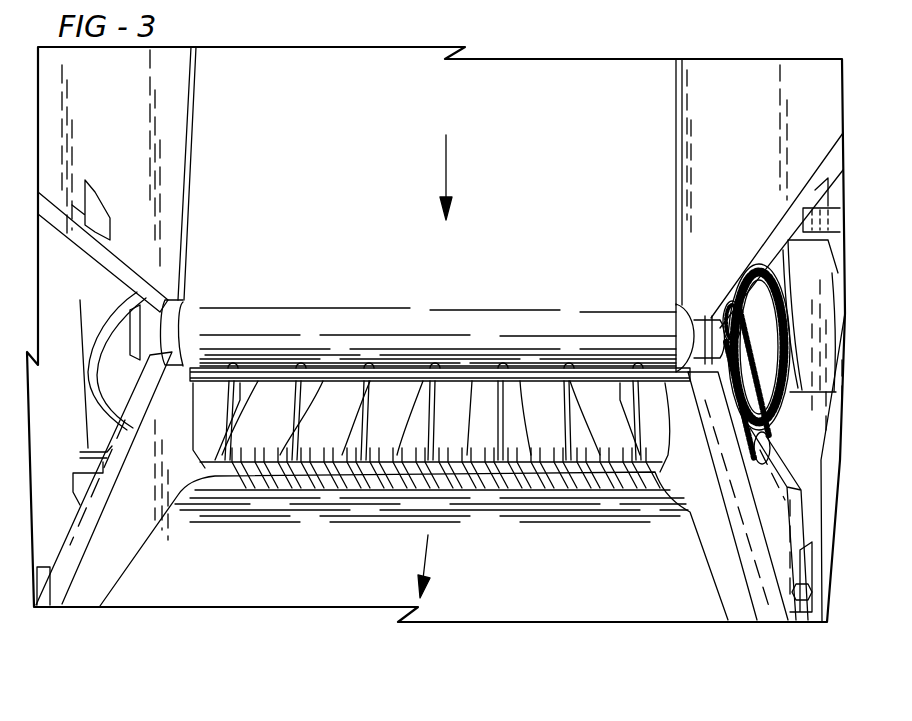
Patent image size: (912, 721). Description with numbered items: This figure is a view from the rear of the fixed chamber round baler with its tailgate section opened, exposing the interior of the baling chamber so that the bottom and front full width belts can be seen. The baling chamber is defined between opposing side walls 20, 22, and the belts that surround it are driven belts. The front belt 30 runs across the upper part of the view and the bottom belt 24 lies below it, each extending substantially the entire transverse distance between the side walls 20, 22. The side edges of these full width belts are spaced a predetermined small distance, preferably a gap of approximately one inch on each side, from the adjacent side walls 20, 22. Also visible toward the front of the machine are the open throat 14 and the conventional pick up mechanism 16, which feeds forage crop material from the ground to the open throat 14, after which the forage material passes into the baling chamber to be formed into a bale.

The open throat 14 is at (617, 422).
The pick up mechanism 16 is at (630, 483).
The side wall 20 is at (57, 207).
The side wall 22 is at (757, 76).
The bottom belt 24 is at (703, 597).
The front belt 30 is at (653, 195).